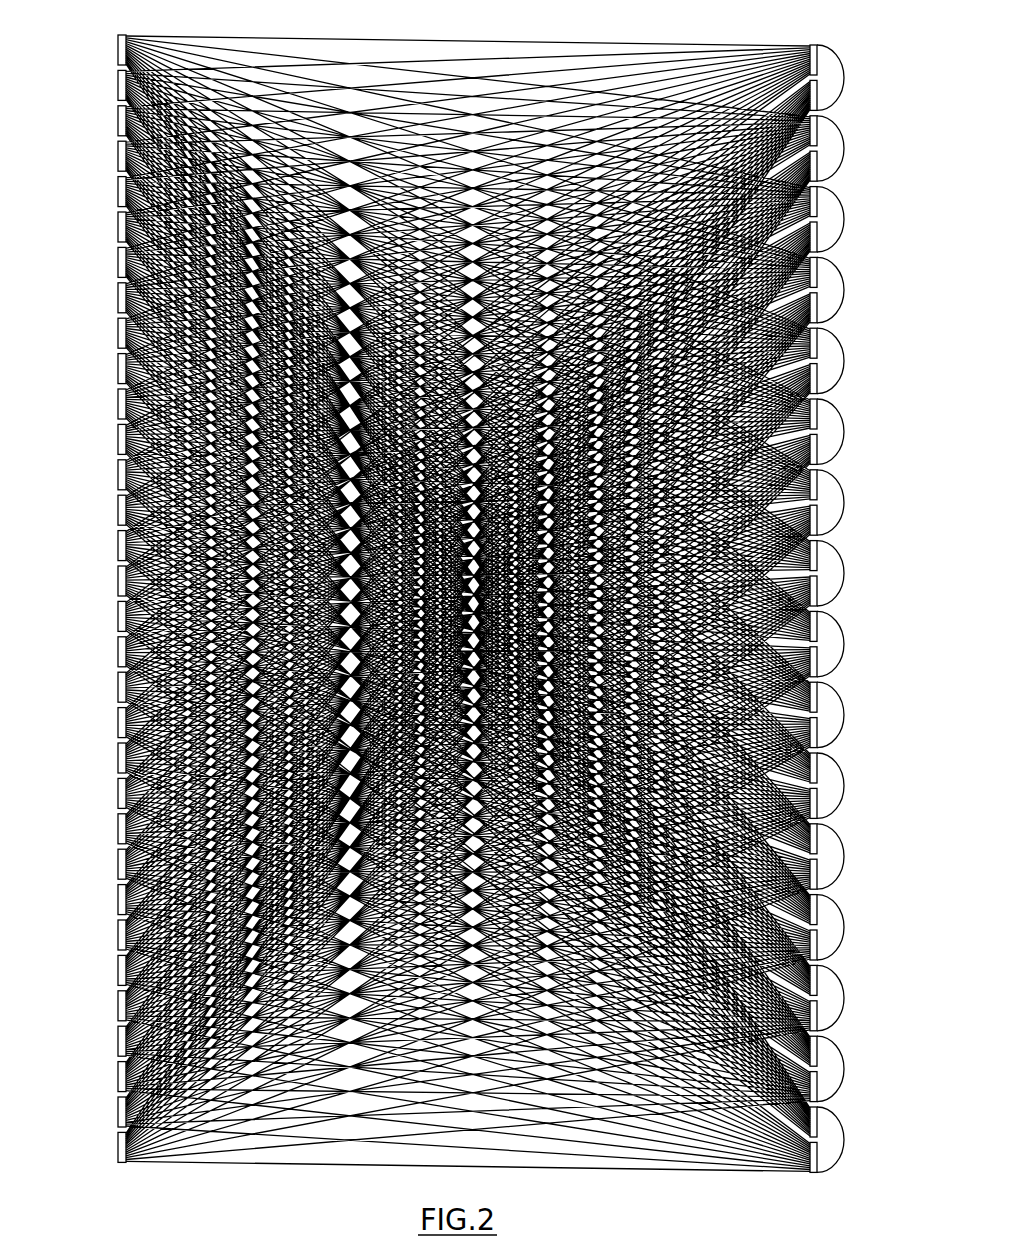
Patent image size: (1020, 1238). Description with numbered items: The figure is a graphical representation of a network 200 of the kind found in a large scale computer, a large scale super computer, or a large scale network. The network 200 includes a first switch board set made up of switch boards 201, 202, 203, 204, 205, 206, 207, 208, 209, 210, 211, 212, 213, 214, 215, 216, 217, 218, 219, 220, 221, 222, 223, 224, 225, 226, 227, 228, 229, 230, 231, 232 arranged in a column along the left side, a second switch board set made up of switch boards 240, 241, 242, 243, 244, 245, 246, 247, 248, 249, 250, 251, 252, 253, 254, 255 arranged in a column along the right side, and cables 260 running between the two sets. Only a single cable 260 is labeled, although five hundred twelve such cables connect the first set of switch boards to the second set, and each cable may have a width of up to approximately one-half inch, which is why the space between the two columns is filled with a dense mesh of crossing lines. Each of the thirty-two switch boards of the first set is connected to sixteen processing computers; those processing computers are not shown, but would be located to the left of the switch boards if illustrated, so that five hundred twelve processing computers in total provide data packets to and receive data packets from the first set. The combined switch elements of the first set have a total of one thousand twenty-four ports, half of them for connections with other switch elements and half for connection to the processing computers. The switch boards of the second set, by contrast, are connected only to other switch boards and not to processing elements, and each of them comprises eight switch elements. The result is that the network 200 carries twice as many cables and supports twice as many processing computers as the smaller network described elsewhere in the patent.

The network 200 is at (817, 31).
The switch board 201 is at (118, 49).
The switch board 202 is at (118, 84).
The switch board 203 is at (118, 120).
The switch board 204 is at (118, 155).
The switch board 205 is at (118, 191).
The switch board 206 is at (118, 226).
The switch board 207 is at (118, 261).
The switch board 208 is at (118, 297).
The switch board 209 is at (118, 332).
The switch board 210 is at (118, 368).
The switch board 211 is at (118, 403).
The switch board 212 is at (118, 438).
The switch board 213 is at (118, 474).
The switch board 214 is at (118, 509).
The switch board 215 is at (118, 545).
The switch board 216 is at (118, 580).
The switch board 217 is at (118, 615).
The switch board 218 is at (118, 651).
The switch board 219 is at (118, 686).
The switch board 220 is at (118, 722).
The switch board 221 is at (118, 757).
The switch board 222 is at (118, 792).
The switch board 223 is at (118, 828).
The switch board 224 is at (118, 863).
The switch board 225 is at (118, 899).
The switch board 226 is at (118, 934).
The switch board 227 is at (118, 969).
The switch board 228 is at (118, 1005).
The switch board 229 is at (118, 1040).
The switch board 230 is at (118, 1076).
The switch board 231 is at (118, 1111).
The switch board 232 is at (118, 1146).
The switch board 240 is at (825, 81).
The switch board 241 is at (825, 152).
The switch board 242 is at (825, 223).
The switch board 243 is at (825, 293).
The switch board 244 is at (825, 364).
The switch board 245 is at (825, 435).
The switch board 246 is at (825, 506).
The switch board 247 is at (825, 577).
The switch board 248 is at (825, 647).
The switch board 249 is at (825, 718).
The switch board 250 is at (825, 789).
The switch board 251 is at (825, 860).
The switch board 252 is at (825, 931).
The switch board 253 is at (825, 1001).
The switch board 254 is at (825, 1072).
The switch board 255 is at (825, 1143).
The cable 260 is at (378, 66).